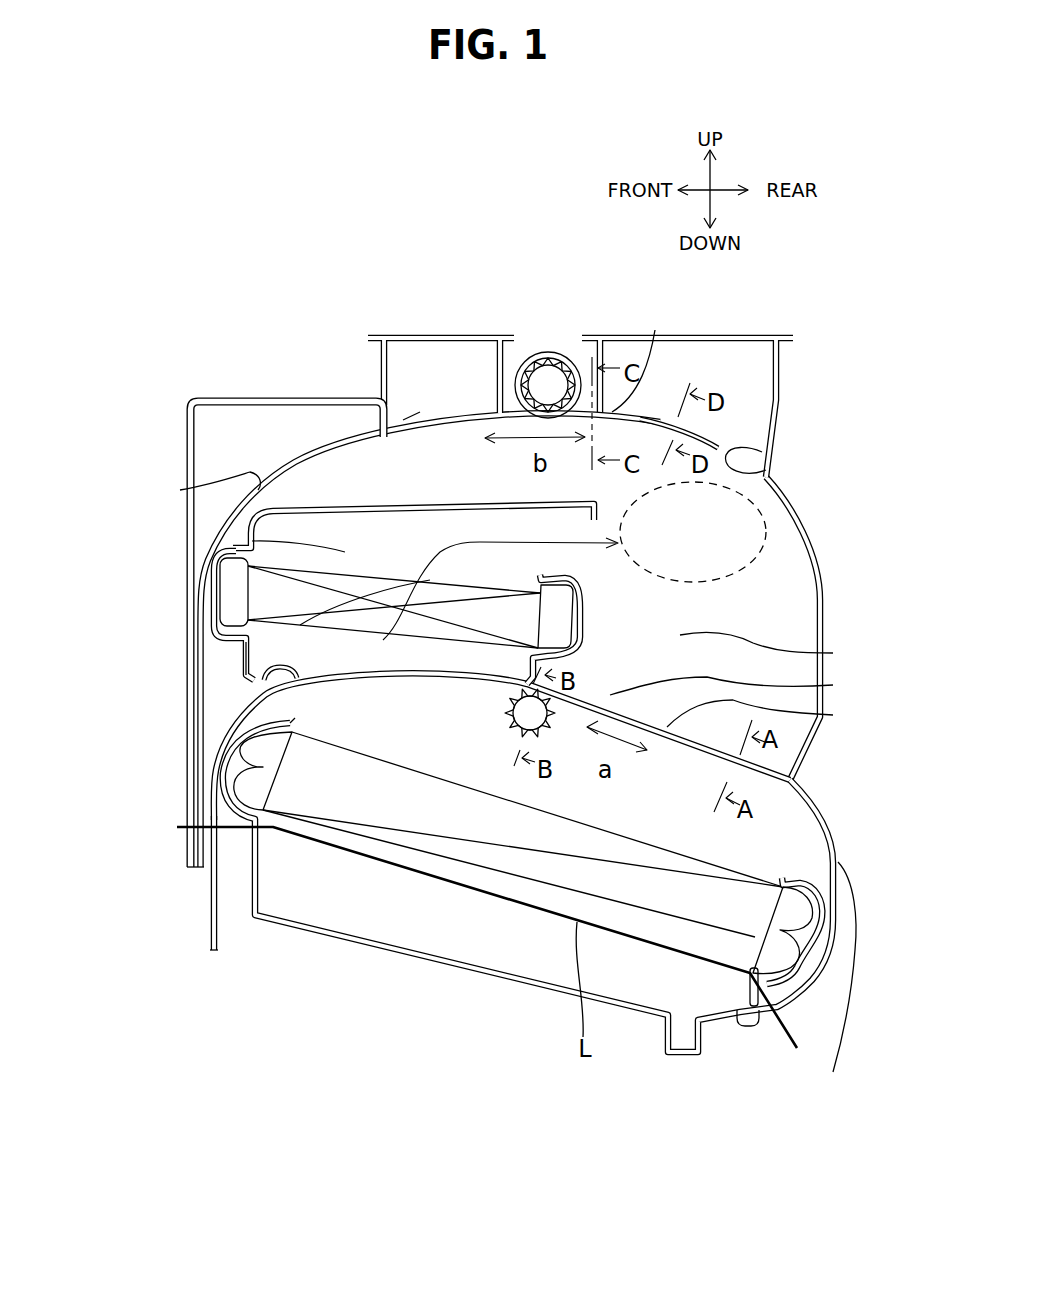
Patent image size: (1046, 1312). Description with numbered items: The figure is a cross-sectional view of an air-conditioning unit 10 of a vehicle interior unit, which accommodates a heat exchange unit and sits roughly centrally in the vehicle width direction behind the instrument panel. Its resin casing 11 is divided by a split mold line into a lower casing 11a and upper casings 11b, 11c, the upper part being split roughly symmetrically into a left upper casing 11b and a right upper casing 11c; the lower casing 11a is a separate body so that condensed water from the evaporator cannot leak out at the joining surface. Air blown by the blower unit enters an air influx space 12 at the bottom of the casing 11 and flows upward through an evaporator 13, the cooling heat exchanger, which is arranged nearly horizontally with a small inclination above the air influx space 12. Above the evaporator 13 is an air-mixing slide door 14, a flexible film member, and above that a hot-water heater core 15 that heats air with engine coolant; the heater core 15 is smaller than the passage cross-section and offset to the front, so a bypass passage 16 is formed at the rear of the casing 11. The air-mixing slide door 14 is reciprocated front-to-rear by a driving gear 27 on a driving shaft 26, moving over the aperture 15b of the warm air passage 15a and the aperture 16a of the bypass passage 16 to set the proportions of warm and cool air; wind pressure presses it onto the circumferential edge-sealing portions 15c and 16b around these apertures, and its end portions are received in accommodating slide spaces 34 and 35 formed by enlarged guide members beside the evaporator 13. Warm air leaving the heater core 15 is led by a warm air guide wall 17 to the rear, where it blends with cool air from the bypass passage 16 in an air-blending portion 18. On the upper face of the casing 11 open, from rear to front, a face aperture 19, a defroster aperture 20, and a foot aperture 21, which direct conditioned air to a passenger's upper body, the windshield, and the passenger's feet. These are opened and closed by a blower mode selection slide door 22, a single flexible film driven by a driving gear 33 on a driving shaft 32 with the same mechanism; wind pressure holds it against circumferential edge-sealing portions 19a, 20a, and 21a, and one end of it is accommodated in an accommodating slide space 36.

The air-conditioning unit 10 is at (828, 572).
The casing 11 is at (718, 1098).
The lower casing 11a is at (763, 1024).
The left upper casing 11b is at (833, 1072).
The right upper casing 11c is at (844, 1011).
The air influx space 12 is at (485, 930).
The evaporator 13 is at (713, 900).
The air-mixing slide door 14 is at (672, 742).
The heater core 15 is at (287, 538).
The air passage 15a is at (246, 639).
The aperture 15b is at (387, 640).
The circumferential edge-sealing portion 15c is at (540, 603).
The bypass passage 16 is at (820, 653).
The aperture 16a is at (820, 718).
The circumferential edge-sealing portion 16b is at (820, 686).
The warm air guide wall 17 is at (445, 506).
The air-blending portion 18 is at (790, 478).
The face aperture 19 is at (655, 418).
The circumferential edge-sealing portion 19a is at (612, 412).
The defroster aperture 20 is at (432, 418).
The circumferential edge-sealing portion 20a is at (496, 410).
The foot aperture 21 is at (350, 452).
The circumferential edge-sealing portion 21a is at (335, 447).
The blower mode selection slide door 22 is at (690, 430).
The driving shaft 26 is at (512, 722).
The driving gear 27 is at (507, 703).
The driving shaft 32 is at (550, 385).
The driving gear 33 is at (540, 356).
The accommodating slide space 34 is at (207, 873).
The accommodating slide space 35 is at (810, 973).
The accommodating slide space 36 is at (197, 855).